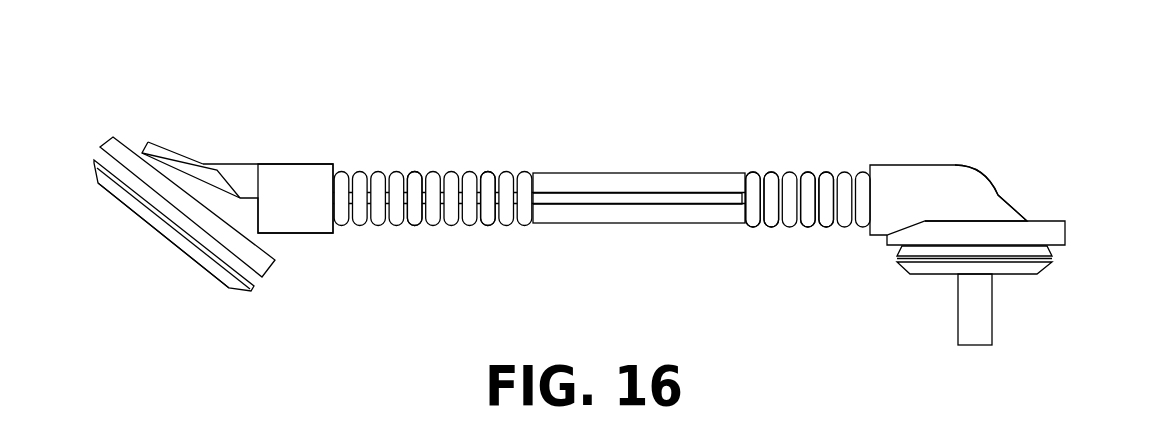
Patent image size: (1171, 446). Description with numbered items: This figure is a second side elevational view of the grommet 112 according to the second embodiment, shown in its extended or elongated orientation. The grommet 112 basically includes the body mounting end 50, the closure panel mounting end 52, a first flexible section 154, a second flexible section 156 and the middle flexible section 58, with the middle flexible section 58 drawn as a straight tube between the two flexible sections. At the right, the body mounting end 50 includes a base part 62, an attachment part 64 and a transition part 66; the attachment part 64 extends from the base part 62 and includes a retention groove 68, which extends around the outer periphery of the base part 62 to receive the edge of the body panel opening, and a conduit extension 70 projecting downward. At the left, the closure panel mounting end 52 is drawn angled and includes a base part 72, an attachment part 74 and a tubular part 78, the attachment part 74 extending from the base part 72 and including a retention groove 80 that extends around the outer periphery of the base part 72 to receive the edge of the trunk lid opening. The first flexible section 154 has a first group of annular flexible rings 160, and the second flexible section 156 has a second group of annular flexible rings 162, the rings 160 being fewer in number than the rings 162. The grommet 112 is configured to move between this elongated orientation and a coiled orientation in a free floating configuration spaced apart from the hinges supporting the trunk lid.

The body mounting end 50 is at (942, 165).
The closure panel mounting end 52 is at (232, 163).
The middle flexible section 58 is at (577, 173).
The base part 62 is at (1053, 232).
The attachment part 64 is at (1037, 267).
The transition part 66 is at (972, 187).
The retention groove 68 is at (1052, 258).
The conduit extension 70 is at (985, 317).
The base part 72 is at (110, 122).
The attachment part 74 is at (112, 188).
The tubular part 78 is at (285, 170).
The retention groove 80 is at (97, 163).
The grommet 112 is at (641, 103).
The first flexible section 154 is at (780, 173).
The second flexible section 156 is at (387, 175).
The annular flexible rings 160 is at (826, 175).
The annular flexible rings 162 is at (414, 175).